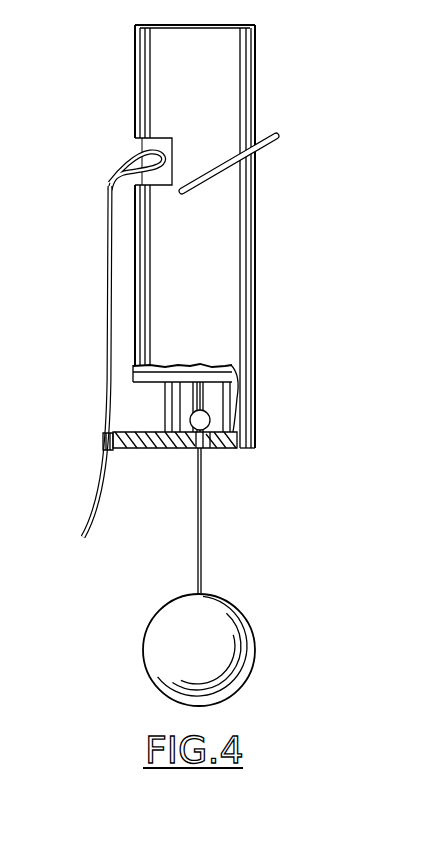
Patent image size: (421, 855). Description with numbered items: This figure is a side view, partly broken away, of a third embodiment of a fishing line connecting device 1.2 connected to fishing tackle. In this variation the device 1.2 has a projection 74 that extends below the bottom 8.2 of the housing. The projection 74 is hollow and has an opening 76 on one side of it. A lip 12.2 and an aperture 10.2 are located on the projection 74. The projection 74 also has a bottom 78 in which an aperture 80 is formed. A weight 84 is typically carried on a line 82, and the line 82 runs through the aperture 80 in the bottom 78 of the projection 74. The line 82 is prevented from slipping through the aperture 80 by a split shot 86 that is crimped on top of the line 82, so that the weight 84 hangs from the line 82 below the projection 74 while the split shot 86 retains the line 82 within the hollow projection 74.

The device 1.2 is at (289, 236).
The projection 74 is at (243, 393).
The bottom 8.2 is at (145, 378).
The opening 76 is at (150, 405).
The split shot 86 is at (210, 419).
The aperture 10.2 is at (103, 449).
The lip 12.2 is at (152, 450).
The bottom 78 is at (218, 451).
The aperture 80 is at (205, 452).
The line 82 is at (199, 542).
The weight 84 is at (182, 628).